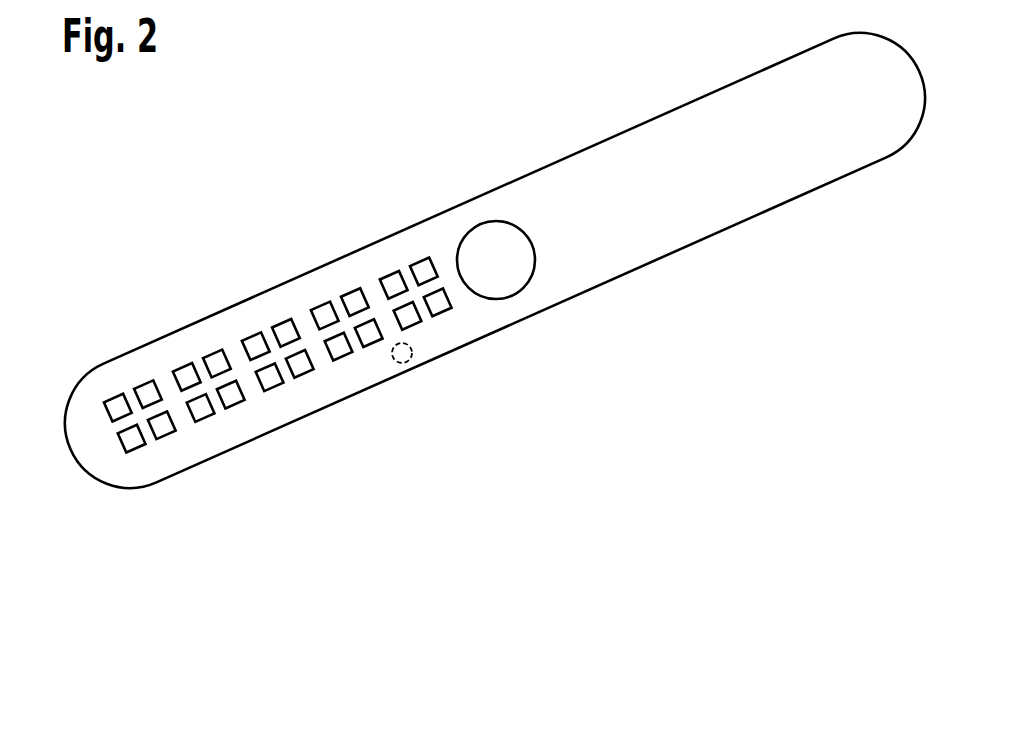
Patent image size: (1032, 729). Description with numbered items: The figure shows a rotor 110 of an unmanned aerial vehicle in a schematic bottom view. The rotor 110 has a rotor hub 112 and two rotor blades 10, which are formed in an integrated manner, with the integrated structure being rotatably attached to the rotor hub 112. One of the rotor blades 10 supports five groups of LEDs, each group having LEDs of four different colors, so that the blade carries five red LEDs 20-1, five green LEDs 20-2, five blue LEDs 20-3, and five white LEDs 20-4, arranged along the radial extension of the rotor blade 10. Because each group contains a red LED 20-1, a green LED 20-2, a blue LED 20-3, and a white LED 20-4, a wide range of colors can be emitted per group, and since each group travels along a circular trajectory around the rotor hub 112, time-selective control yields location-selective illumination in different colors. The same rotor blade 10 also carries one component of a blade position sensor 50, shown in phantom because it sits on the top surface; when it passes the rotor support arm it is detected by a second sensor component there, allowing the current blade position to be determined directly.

The rotor 110 is at (341, 109).
The rotor blade 10 is at (85, 450).
The rotor hub 112 is at (485, 237).
The blade position sensor 50 is at (407, 363).
The red LED 20-1 is at (422, 268).
The green LED 20-2 is at (116, 405).
The blue LED 20-3 is at (162, 429).
The white LED 20-4 is at (132, 443).